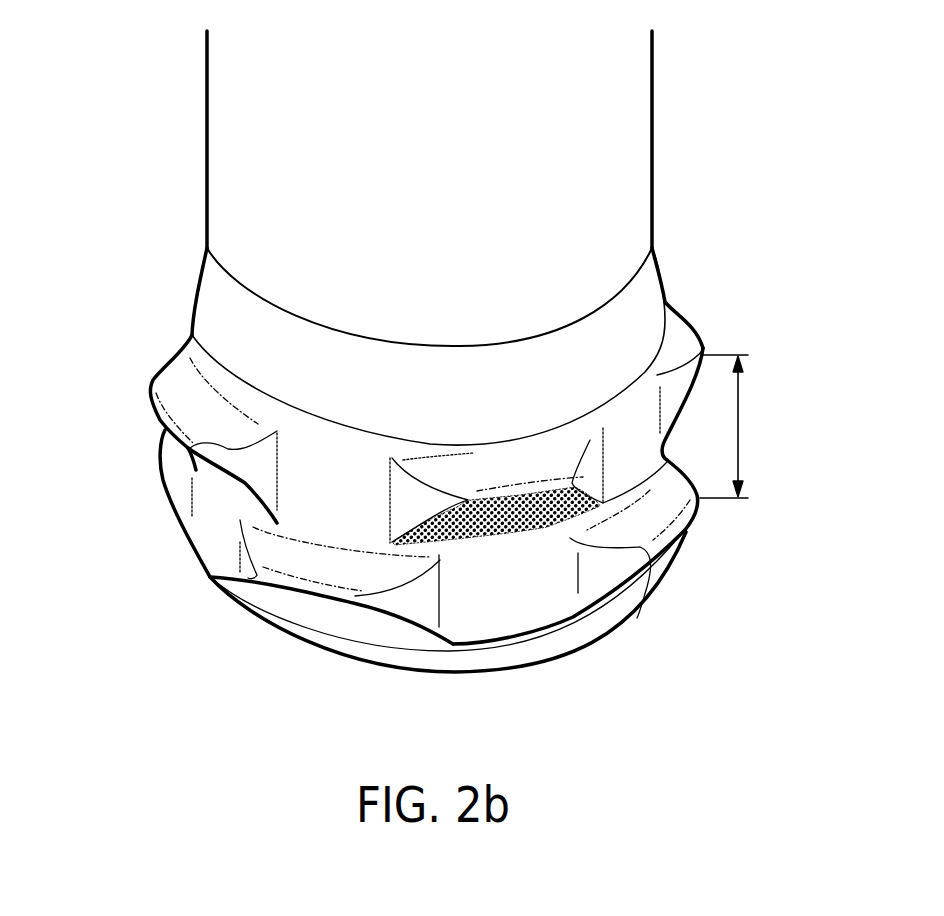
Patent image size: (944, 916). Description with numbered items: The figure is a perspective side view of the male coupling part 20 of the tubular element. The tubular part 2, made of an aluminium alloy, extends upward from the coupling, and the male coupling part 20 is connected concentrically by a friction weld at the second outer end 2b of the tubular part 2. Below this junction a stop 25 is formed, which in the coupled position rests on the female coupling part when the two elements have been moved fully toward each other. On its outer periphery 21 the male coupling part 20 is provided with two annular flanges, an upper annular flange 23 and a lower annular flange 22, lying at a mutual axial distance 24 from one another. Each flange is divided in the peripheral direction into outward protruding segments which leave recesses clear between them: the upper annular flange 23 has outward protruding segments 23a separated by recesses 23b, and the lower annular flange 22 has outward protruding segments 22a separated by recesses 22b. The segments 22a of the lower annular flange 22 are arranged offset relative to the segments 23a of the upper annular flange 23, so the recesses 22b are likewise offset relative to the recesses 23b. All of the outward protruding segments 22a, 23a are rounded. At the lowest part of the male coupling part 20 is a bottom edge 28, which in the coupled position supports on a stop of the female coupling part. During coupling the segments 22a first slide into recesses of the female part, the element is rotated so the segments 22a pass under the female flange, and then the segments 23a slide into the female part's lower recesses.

The male coupling part 20 is at (108, 134).
The tubular part 2 is at (207, 66).
The second outer end 2b is at (207, 235).
The stop 25 is at (213, 318).
The upper annular flange 23 is at (708, 340).
The outward protruding segments 23a is at (150, 392).
The recesses 23b is at (354, 498).
The lower annular flange 22 is at (702, 518).
The outward protruding segments 22a is at (196, 470).
The recesses 22b is at (213, 535).
The outer periphery 21 is at (598, 641).
The bottom edge 28 is at (362, 669).
The mutual axial distance 24 is at (747, 423).